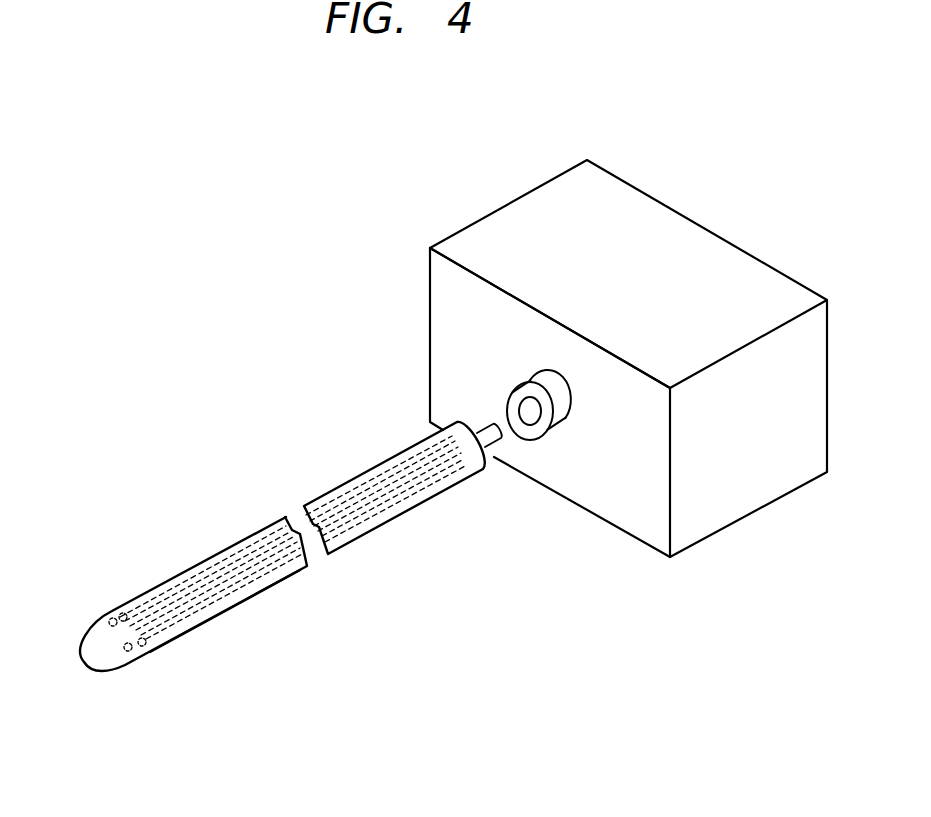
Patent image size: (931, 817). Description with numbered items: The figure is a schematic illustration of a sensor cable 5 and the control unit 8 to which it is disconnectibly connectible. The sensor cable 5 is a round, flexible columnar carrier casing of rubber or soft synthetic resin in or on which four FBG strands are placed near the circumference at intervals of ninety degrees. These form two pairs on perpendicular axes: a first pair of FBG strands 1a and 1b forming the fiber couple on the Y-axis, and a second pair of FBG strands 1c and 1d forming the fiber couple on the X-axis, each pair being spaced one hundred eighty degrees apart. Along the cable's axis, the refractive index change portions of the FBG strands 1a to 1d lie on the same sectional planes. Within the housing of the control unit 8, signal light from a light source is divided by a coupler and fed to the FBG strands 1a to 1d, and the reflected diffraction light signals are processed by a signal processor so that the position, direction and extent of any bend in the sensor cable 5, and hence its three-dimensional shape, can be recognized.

The control unit 8 is at (442, 287).
The sensor cable 5 is at (287, 559).
The FBG strand 1a is at (158, 592).
The FBG strand 1b is at (145, 654).
The FBG strand 1c is at (114, 612).
The FBG strand 1d is at (222, 612).